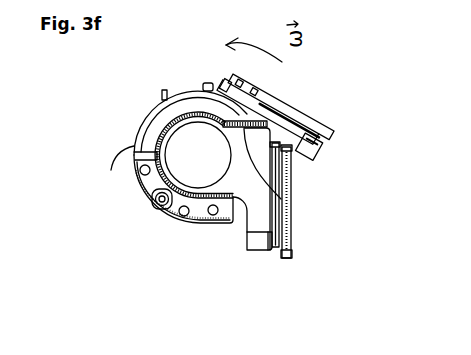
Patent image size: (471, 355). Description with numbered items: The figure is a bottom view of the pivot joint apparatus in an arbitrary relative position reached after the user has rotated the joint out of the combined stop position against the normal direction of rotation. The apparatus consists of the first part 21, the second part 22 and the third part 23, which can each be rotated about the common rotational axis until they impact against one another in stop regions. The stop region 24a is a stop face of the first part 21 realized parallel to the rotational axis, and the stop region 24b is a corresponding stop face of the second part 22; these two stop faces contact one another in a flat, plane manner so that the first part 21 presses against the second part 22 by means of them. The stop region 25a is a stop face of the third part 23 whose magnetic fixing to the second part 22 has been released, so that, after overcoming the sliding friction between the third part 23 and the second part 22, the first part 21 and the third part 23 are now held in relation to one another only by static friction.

The first part 21 is at (260, 252).
The second part 22 is at (128, 183).
The third part 23 is at (317, 151).
The stop region 24a is at (272, 96).
The stop region 24b is at (279, 196).
The stop region 25a is at (200, 90).